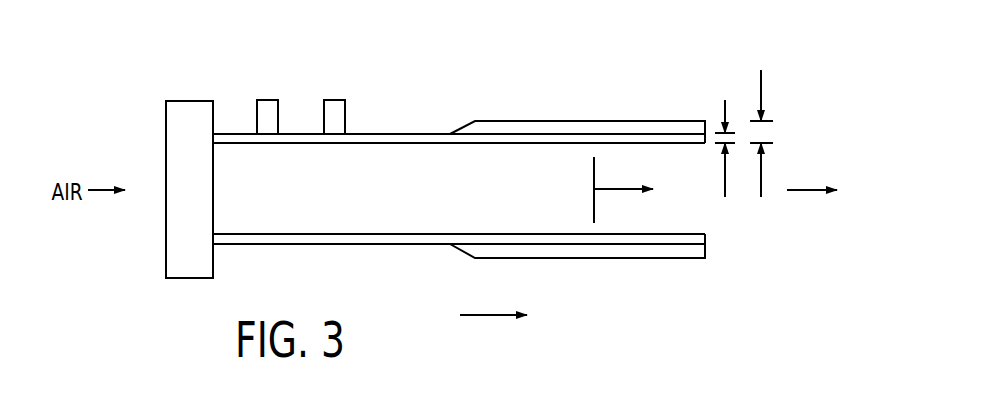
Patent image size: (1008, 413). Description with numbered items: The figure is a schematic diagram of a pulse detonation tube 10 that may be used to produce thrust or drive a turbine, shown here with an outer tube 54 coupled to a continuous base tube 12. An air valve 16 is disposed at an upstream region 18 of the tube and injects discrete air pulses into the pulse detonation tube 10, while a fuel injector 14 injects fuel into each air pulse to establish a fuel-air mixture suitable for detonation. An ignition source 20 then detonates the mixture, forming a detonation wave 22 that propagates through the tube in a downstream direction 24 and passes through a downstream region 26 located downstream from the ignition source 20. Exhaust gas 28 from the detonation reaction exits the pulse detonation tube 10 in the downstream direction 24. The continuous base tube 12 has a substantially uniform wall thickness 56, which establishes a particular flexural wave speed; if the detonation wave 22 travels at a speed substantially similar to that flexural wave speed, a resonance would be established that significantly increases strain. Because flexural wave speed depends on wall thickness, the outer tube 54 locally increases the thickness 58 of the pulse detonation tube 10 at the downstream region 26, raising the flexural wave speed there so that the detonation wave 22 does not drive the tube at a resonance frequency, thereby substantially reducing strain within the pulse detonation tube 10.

The pulse detonation tube 10 is at (470, 70).
The continuous base tube 12 is at (427, 134).
The fuel injector 14 is at (270, 100).
The air valve 16 is at (187, 100).
The upstream region 18 is at (240, 67).
The ignition source 20 is at (336, 100).
The detonation wave 22 is at (594, 176).
The downstream direction 24 is at (473, 315).
The downstream region 26 is at (602, 60).
The exhaust gas 28 is at (805, 190).
The outer tube 54 is at (646, 121).
The wall thickness 56 is at (725, 100).
The thickness 58 is at (761, 95).